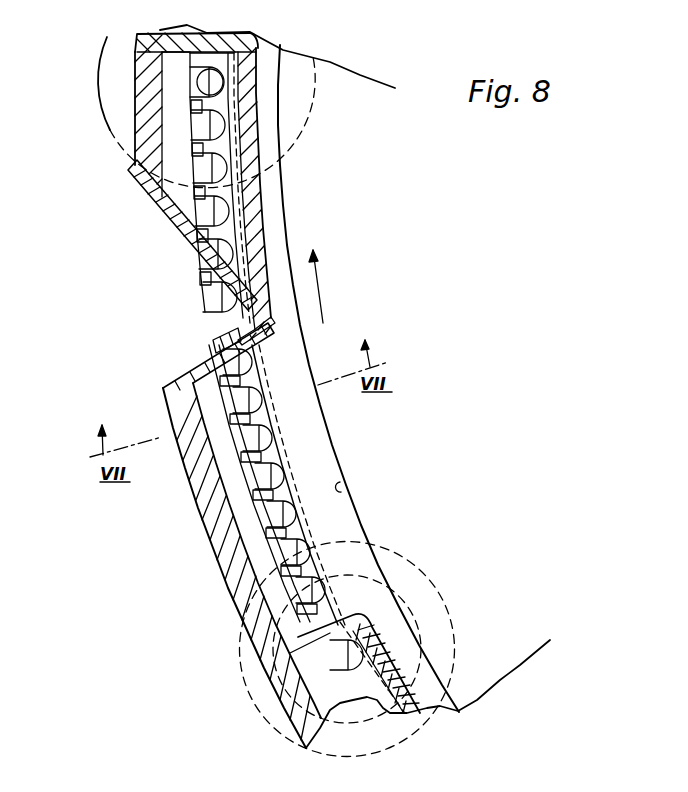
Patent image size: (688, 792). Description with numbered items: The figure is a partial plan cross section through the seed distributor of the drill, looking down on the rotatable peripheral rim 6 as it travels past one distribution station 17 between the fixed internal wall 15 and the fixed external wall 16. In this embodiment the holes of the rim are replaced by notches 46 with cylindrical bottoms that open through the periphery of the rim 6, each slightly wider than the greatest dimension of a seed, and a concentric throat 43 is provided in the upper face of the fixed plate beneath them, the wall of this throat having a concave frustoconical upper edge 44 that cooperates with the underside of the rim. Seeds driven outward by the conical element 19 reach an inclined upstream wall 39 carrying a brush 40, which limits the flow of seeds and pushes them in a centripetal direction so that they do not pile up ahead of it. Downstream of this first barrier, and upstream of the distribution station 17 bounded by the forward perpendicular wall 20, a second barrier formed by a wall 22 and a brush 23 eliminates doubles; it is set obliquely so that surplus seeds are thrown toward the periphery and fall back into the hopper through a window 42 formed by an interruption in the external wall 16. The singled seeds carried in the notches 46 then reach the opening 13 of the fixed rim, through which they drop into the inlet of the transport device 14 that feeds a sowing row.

The peripheral rim 6 is at (313, 423).
The opening 13 is at (210, 80).
The transport device 14 is at (265, 708).
The fixed internal wall 15 is at (247, 212).
The fixed external wall 16 is at (140, 125).
The distribution station 17 is at (170, 107).
The conical element 19 is at (345, 490).
The forward perpendicular wall 20 is at (187, 27).
The barrier wall 22 is at (167, 209).
The brush 23 is at (193, 245).
The upstream wall 39 is at (267, 325).
The brush 40 is at (240, 352).
The window 42 is at (158, 316).
The concentric throat 43 is at (285, 458).
The concave frustoconical upper edge 44 is at (207, 290).
The notch 46 is at (283, 530).